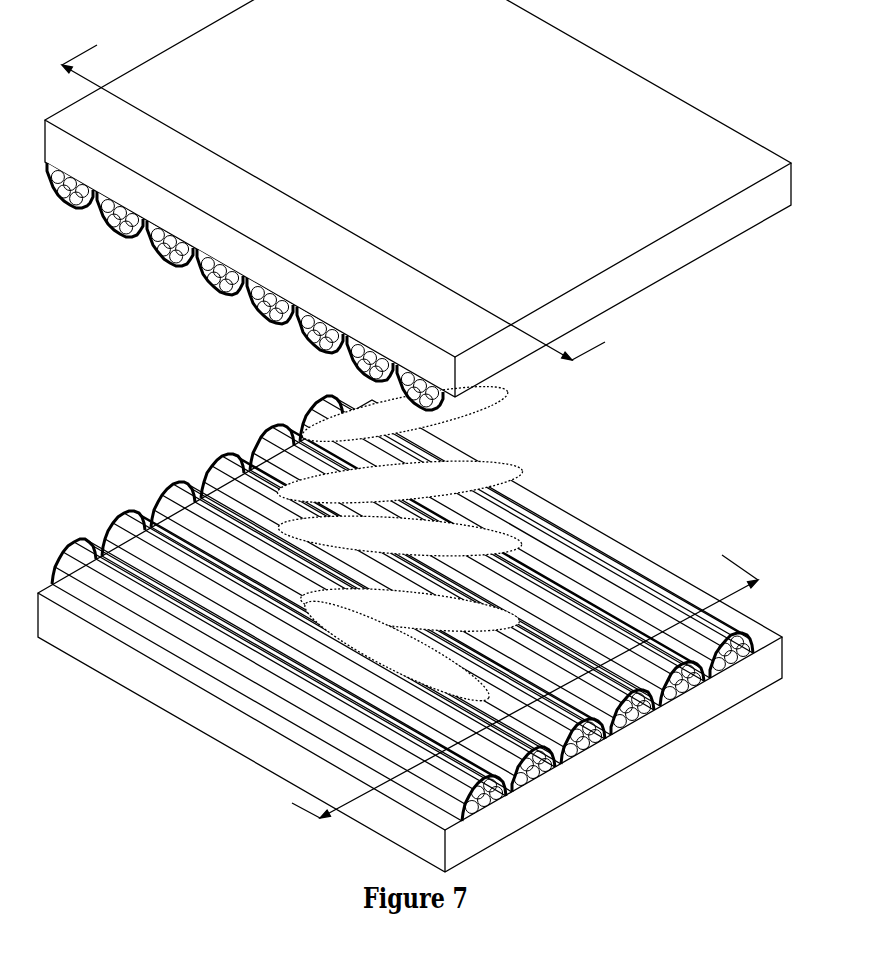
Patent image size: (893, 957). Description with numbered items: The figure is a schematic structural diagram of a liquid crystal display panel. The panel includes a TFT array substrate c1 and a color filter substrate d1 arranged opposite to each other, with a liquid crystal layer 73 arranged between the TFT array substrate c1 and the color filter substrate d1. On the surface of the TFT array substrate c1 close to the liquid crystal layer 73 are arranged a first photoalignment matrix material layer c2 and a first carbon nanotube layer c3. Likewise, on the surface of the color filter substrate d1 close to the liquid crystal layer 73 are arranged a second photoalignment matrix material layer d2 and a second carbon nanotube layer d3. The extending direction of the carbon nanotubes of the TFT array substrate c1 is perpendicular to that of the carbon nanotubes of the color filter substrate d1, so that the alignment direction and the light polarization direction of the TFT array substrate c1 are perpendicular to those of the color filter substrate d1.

The TFT array substrate c1 is at (595, 780).
The first photoalignment matrix material layer c2 is at (610, 727).
The first carbon nanotube layer c3 is at (687, 693).
The liquid crystal layer 73 is at (500, 396).
The color filter substrate d1 is at (252, 310).
The second photoalignment matrix material layer d2 is at (130, 242).
The second carbon nanotube layer d3 is at (215, 290).